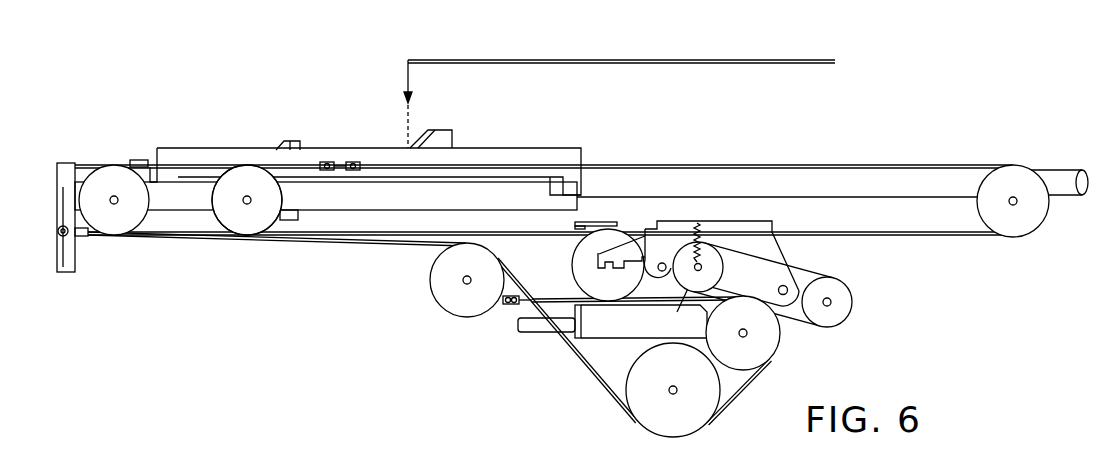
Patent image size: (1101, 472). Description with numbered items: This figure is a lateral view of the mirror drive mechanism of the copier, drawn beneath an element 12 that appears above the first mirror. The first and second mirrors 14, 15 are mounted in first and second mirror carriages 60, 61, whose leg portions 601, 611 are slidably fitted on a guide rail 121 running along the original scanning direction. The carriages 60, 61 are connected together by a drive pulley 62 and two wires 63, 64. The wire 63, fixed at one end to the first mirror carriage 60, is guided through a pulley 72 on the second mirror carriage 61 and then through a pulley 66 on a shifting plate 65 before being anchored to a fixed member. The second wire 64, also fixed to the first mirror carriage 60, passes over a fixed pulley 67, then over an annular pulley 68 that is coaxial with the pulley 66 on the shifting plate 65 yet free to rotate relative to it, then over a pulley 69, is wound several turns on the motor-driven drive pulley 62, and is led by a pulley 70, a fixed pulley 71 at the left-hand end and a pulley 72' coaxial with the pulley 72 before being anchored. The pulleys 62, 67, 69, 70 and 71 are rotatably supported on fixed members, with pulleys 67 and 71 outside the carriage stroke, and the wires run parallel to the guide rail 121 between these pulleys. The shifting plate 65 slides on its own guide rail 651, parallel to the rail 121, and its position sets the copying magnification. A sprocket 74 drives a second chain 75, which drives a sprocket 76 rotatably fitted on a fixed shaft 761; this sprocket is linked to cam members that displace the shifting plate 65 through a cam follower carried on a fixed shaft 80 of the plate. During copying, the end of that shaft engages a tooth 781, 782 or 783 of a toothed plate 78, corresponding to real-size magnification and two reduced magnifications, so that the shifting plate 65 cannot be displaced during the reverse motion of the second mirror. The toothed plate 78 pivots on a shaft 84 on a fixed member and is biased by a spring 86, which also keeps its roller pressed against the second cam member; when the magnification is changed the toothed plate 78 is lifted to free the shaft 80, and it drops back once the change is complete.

The sheet 12 is at (690, 62).
The first mirror 14 is at (418, 131).
The second mirror 15 is at (291, 141).
The first mirror carriage 60 is at (440, 158).
The leg portion 601 is at (170, 172).
The second mirror carriage 61 is at (335, 205).
The leg portion 611 is at (137, 159).
The drive pulley 62 is at (650, 400).
The wire 63 is at (386, 243).
The second wire 64 is at (607, 384).
The shifting plate 65 is at (634, 334).
The guide rail 651 is at (517, 326).
The pulley 66 is at (595, 296).
The fixed pulley 67 is at (1027, 219).
The annular pulley 68 is at (583, 281).
The pulley 69 is at (775, 333).
The pulley 70 is at (440, 283).
The fixed pulley 71 is at (110, 215).
The pulley 72 is at (236, 213).
The pulley 72' is at (247, 216).
The sprocket 74 is at (850, 306).
The second chain 75 is at (828, 277).
The sprocket 76 is at (720, 254).
The fixed shaft 761 is at (684, 290).
The toothed plate 78 is at (672, 221).
The tooth 781 is at (656, 273).
The tooth 782 is at (643, 236).
The tooth 783 is at (598, 258).
The fixed shaft 80 is at (662, 262).
The shaft 84 is at (786, 284).
The spring 86 is at (699, 228).
The guide rail 121 is at (905, 180).